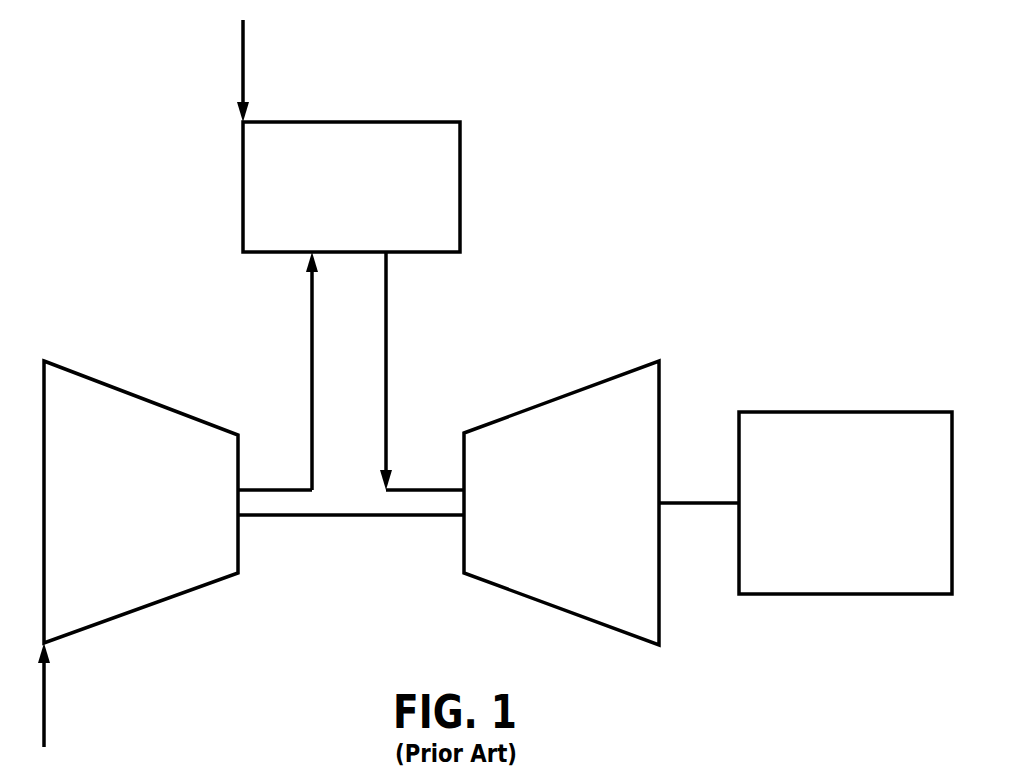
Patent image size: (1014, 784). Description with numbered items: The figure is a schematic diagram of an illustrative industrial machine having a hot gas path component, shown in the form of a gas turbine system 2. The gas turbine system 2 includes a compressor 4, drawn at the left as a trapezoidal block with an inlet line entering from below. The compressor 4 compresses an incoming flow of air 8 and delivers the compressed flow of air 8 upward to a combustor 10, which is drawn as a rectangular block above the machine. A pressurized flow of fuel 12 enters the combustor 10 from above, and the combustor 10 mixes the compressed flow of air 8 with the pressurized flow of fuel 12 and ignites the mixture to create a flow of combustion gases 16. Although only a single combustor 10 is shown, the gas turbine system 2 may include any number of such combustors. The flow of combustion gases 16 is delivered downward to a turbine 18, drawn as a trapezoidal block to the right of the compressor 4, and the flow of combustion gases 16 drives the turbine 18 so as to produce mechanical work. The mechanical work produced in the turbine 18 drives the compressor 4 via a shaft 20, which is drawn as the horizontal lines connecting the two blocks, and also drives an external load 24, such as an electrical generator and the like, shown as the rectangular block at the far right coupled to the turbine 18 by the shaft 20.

The gas turbine system 2 is at (158, 244).
The compressor 4 is at (112, 518).
The flow of air 8 is at (44, 712).
The combustor 10 is at (326, 202).
The pressurized flow of fuel 12 is at (243, 65).
The flow of combustion gases 16 is at (387, 422).
The turbine 18 is at (539, 514).
The shaft 20 is at (697, 505).
The external load 24 is at (831, 512).